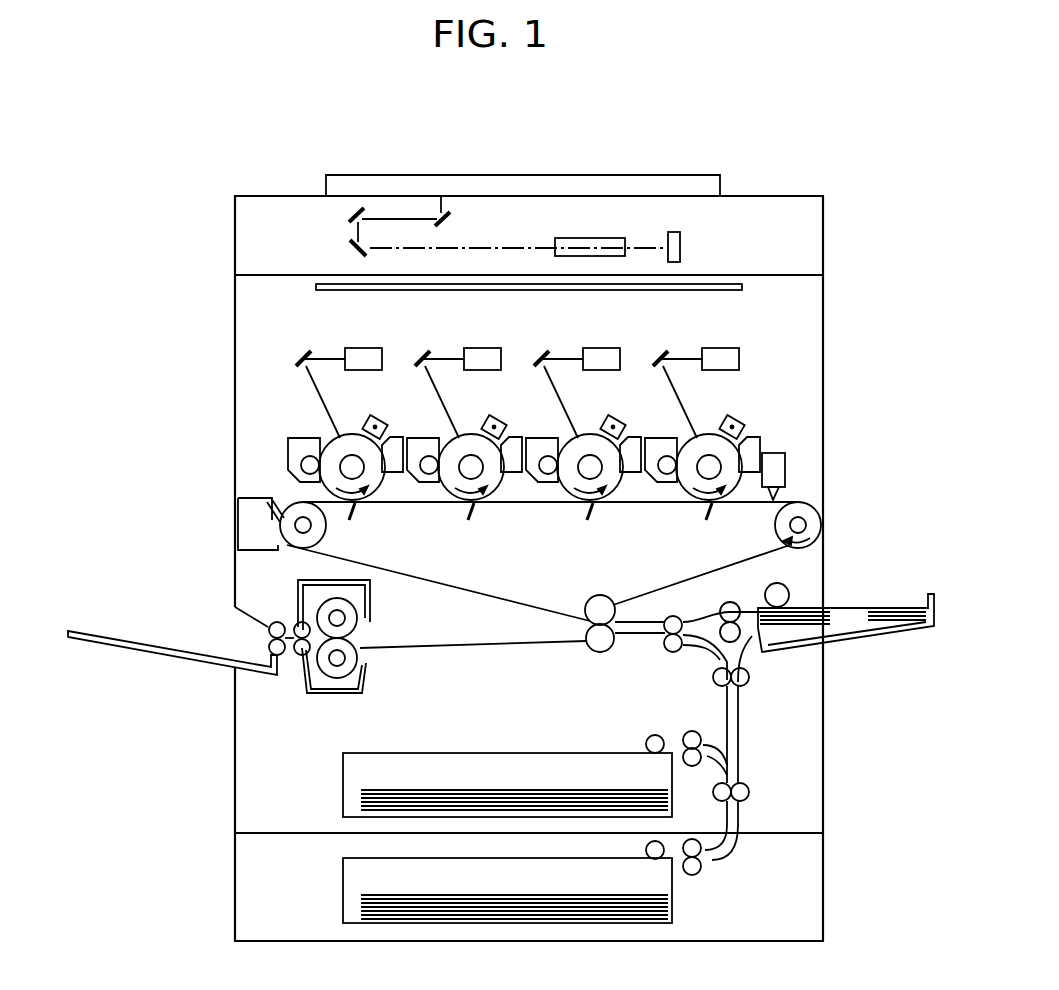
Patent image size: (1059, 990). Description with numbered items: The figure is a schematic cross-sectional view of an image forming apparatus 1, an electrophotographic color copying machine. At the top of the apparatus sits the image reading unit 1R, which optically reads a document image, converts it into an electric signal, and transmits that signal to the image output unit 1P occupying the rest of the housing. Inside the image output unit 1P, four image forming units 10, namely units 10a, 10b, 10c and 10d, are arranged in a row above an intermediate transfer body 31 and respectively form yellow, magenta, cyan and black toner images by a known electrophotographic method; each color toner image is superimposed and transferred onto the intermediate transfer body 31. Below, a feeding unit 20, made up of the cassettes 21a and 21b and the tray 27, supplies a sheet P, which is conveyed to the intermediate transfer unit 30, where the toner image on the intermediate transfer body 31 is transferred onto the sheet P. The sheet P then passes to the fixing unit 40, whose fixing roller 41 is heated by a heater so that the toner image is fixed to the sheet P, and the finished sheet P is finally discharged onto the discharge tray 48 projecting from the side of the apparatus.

The image forming apparatus 1 is at (829, 174).
The image reading unit 1R is at (810, 236).
The image output unit 1P is at (812, 296).
The image forming units 10 is at (547, 408).
The image forming unit 10a is at (680, 348).
The image forming unit 10b is at (561, 348).
The image forming unit 10c is at (446, 348).
The image forming unit 10d is at (330, 348).
The intermediate transfer unit 30 is at (580, 590).
The intermediate transfer body 31 is at (672, 603).
The feeding unit 20 is at (750, 748).
The feeding unit component 21a is at (474, 750).
The feeding unit component 21b is at (343, 890).
The feeding unit component 27 is at (880, 660).
The fixing unit 40 is at (346, 674).
The fixing roller 41 is at (340, 624).
The discharge tray 48 is at (152, 640).
The sheet P is at (864, 607).